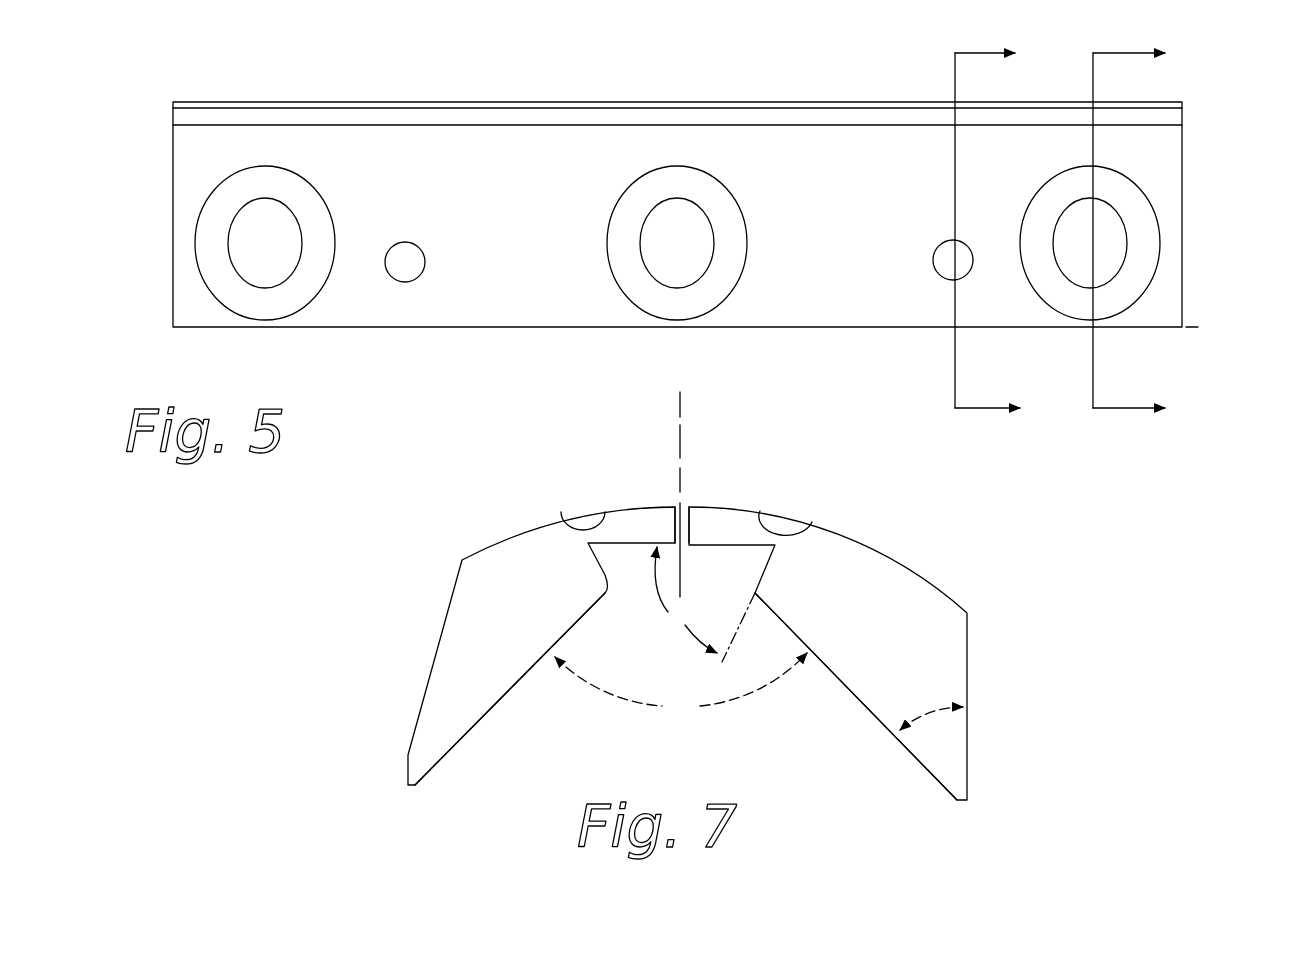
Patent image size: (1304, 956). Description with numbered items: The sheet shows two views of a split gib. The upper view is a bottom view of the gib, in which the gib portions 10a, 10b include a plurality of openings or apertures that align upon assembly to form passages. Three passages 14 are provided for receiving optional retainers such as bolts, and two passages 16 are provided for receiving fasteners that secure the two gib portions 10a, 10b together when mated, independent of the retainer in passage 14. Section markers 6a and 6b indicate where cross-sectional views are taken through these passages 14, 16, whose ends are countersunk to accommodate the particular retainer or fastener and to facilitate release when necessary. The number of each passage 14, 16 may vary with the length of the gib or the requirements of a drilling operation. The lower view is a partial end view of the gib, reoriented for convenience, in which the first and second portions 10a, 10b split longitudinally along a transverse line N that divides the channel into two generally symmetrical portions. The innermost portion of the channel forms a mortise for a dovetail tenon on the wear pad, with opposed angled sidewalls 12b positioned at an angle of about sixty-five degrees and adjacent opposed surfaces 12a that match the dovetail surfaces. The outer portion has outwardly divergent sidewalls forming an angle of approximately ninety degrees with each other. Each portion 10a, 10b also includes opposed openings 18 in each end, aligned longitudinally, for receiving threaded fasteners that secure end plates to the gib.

In FIG. 7, the first gib portion 10a is at (932, 646).
In FIG. 5, the second gib portion 10b is at (846, 252).
In FIG. 7, the second gib portion 10b is at (540, 622).
In FIG. 7, the opposed surfaces 12a is at (597, 567).
In FIG. 7, the angled sidewalls 12b is at (517, 688).
In FIG. 5, the passage 14 is at (292, 207).
In FIG. 5, the passage 16 is at (414, 237).
In FIG. 7, the openings 18 is at (585, 515).
In FIG. 5, the section line 6a is at (1129, 234).
In FIG. 5, the section line 6b is at (988, 235).
In FIG. 7, the transverse line N is at (680, 423).